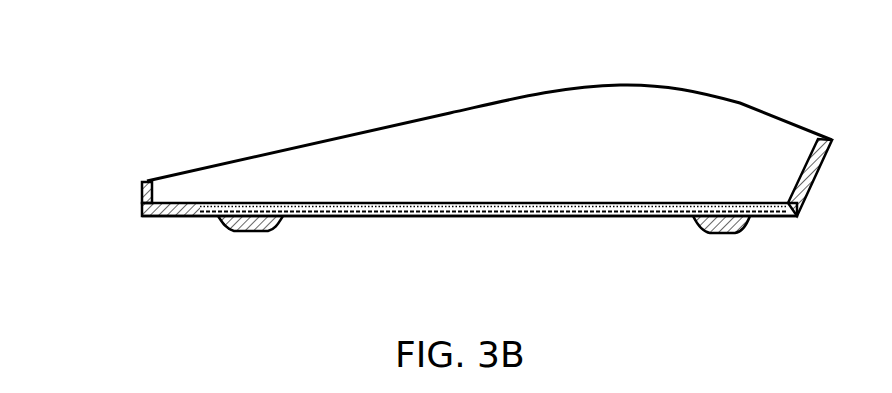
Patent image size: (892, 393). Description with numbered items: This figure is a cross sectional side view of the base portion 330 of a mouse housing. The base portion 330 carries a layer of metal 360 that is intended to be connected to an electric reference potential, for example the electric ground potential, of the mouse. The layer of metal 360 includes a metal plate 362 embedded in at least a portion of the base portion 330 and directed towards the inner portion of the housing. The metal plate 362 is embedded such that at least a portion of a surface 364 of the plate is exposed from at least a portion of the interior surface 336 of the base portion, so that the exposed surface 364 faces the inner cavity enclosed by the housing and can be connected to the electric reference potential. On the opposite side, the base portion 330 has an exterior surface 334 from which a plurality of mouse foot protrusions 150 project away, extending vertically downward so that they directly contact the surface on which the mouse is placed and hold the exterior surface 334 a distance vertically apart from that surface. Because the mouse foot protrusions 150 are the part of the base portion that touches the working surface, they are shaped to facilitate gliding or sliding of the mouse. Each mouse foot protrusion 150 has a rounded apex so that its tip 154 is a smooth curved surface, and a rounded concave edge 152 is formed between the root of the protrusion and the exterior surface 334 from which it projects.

The base portion 330 is at (743, 62).
The interior surface 336 is at (172, 203).
The layer of metal 360 is at (417, 171).
The metal plate 362 is at (552, 203).
The surface of the metal plate 364 is at (473, 203).
The exterior surface 334 is at (482, 216).
The mouse foot protrusion 150 is at (250, 232).
The rounded concave edge 152 is at (225, 219).
The tip 154 is at (237, 226).